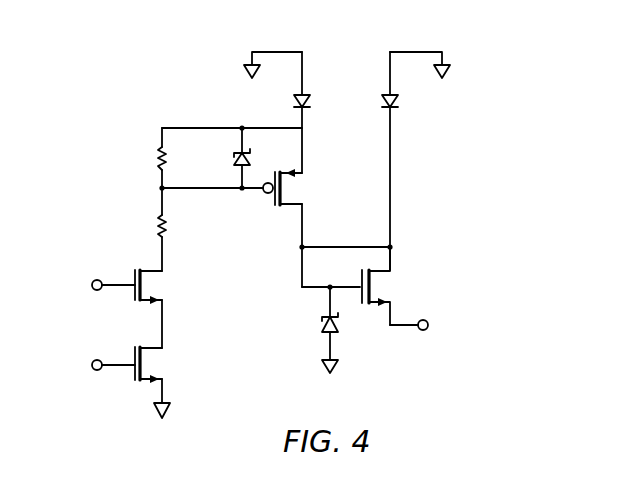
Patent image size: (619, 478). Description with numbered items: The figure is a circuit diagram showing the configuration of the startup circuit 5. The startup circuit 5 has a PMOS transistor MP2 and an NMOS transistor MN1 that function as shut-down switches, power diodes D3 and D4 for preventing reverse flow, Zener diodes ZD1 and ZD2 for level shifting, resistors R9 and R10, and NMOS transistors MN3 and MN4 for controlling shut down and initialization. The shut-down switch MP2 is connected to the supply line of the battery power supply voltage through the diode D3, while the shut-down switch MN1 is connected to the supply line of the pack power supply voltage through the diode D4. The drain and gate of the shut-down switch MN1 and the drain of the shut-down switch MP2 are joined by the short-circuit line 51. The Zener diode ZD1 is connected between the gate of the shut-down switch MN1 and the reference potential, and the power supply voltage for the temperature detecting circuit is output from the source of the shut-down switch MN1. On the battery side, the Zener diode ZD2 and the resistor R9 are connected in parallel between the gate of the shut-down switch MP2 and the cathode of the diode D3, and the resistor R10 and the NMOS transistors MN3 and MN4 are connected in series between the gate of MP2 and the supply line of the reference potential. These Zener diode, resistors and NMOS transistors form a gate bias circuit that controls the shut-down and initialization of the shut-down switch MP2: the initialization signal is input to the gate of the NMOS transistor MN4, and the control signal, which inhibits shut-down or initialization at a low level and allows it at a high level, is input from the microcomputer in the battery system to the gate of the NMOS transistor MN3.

The startup circuit 5 is at (178, 78).
The short-circuit line 51 is at (348, 245).
The power diode D3 is at (289, 100).
The power diode D4 is at (405, 100).
The resistor R9 is at (149, 158).
The resistor R10 is at (142, 226).
The Zener diode ZD1 is at (308, 324).
The Zener diode ZD2 is at (221, 157).
The PMOS transistor MP2 is at (294, 187).
The NMOS transistor MN1 is at (389, 286).
The NMOS transistor MN3 is at (145, 287).
The NMOS transistor MN4 is at (145, 365).